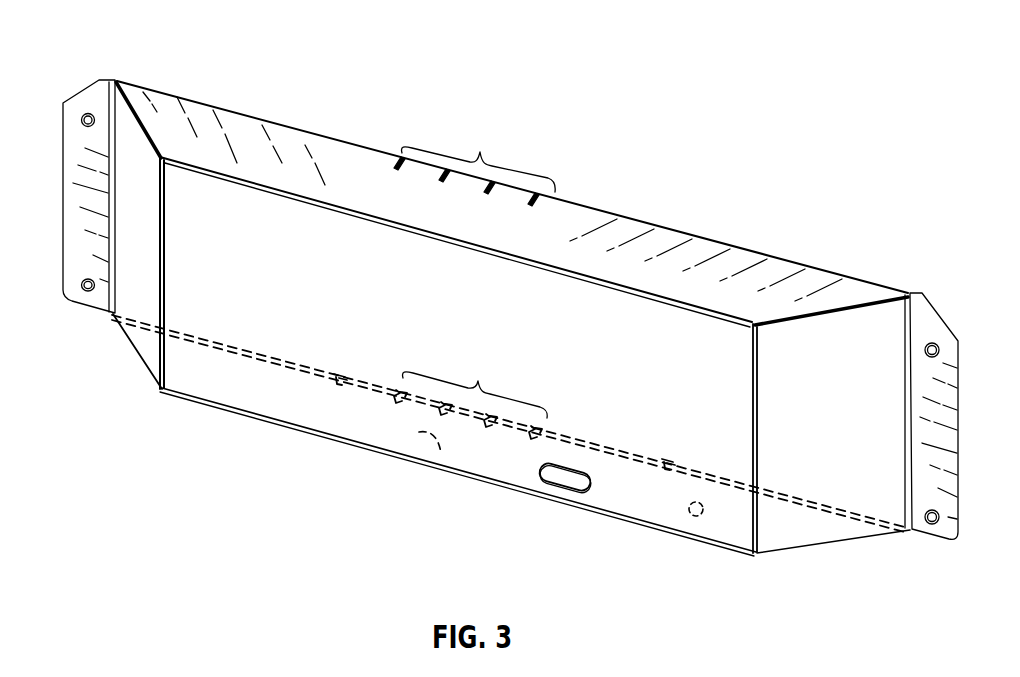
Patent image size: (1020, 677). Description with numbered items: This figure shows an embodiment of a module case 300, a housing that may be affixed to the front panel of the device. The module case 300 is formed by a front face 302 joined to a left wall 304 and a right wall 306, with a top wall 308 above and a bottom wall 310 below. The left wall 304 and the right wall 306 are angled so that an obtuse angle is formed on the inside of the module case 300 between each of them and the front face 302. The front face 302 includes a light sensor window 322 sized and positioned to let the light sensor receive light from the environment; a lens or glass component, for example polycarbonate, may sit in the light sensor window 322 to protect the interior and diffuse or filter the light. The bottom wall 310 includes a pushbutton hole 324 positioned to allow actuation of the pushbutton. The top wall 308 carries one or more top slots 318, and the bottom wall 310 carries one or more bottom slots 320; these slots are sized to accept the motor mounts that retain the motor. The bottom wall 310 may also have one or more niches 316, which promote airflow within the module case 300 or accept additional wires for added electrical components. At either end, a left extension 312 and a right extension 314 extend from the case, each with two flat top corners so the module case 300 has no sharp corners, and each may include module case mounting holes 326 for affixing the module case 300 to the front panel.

The module case 300 is at (851, 579).
The front face 302 is at (252, 323).
The left wall 304 is at (150, 302).
The right wall 306 is at (863, 347).
The top wall 308 is at (672, 234).
The bottom wall 310 is at (440, 456).
The left extension 312 is at (99, 92).
The right extension 314 is at (920, 445).
The niches 316 is at (343, 375).
The top slots 318 is at (481, 152).
The bottom slots 320 is at (479, 380).
The light sensor window 322 is at (567, 483).
The pushbutton hole 324 is at (694, 517).
The module case mounting holes 326 is at (88, 113).